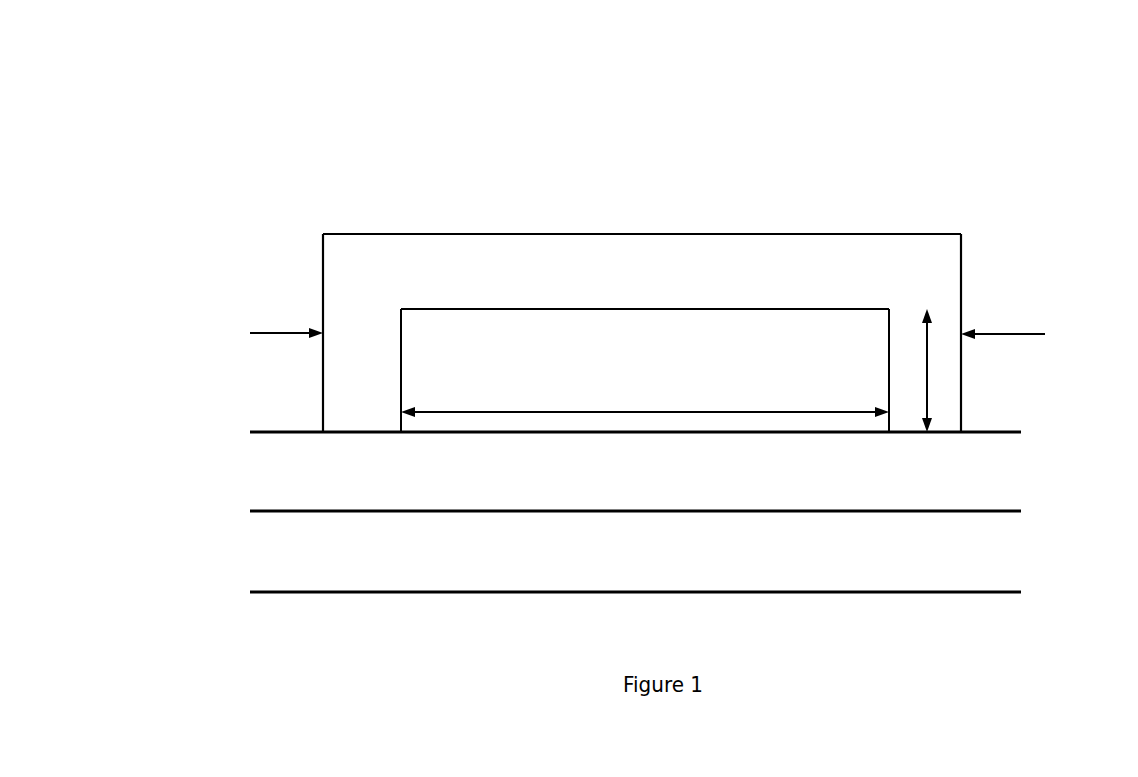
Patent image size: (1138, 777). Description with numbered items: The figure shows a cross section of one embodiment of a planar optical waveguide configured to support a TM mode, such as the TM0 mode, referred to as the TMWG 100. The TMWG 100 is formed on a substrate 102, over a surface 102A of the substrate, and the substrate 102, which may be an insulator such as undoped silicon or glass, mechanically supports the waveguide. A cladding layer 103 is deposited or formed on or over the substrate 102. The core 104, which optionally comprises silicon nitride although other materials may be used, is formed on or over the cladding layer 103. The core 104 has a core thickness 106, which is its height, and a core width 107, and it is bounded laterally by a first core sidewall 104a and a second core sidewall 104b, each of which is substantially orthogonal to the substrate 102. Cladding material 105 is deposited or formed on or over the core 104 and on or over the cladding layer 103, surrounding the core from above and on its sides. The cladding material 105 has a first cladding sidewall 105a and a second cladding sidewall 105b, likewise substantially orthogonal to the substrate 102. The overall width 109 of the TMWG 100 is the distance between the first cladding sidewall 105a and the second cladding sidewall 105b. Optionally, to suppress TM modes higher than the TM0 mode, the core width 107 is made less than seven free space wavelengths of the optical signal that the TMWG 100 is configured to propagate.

The planar optical waveguide configured to support a TM mode (TMWG) 100 is at (658, 122).
The substrate 102 is at (635, 563).
The surface of the substrate 102A is at (967, 498).
The cladding layer 103 is at (635, 457).
The core 104 is at (645, 340).
The first core sidewall 104a is at (889, 370).
The second core sidewall 104b is at (401, 370).
The cladding material 105 is at (642, 266).
The first cladding sidewall 105a is at (961, 290).
The second cladding sidewall 105b is at (323, 271).
The core thickness 106 is at (927, 337).
The core width 107 is at (702, 412).
The width 109 is at (1020, 333).